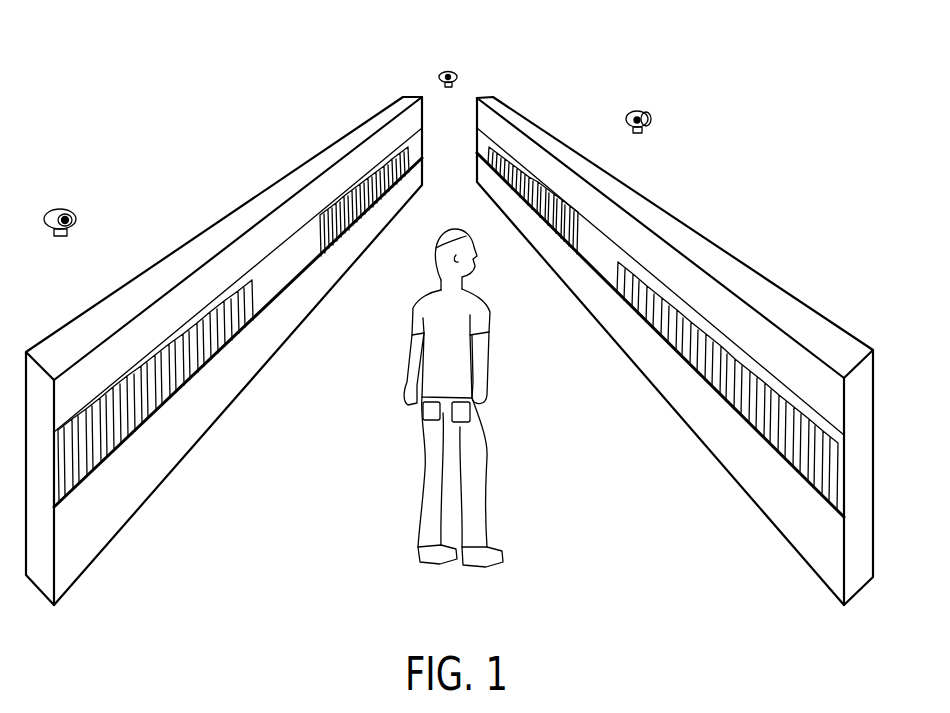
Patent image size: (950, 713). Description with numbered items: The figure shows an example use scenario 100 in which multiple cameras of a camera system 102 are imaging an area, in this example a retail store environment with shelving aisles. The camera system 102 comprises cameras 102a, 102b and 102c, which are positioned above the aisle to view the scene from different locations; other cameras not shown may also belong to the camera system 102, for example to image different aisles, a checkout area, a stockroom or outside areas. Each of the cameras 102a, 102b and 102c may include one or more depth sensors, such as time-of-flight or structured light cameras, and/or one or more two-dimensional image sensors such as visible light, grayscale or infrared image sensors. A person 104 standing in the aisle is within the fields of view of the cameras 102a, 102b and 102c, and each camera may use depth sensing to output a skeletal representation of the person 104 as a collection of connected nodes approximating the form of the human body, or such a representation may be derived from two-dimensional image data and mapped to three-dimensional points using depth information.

The environment / system 100 is at (785, 38).
The camera system 102 is at (80, 180).
The camera 102a is at (452, 72).
The camera 102b is at (650, 112).
The camera 102c is at (73, 207).
The person 104 is at (488, 307).